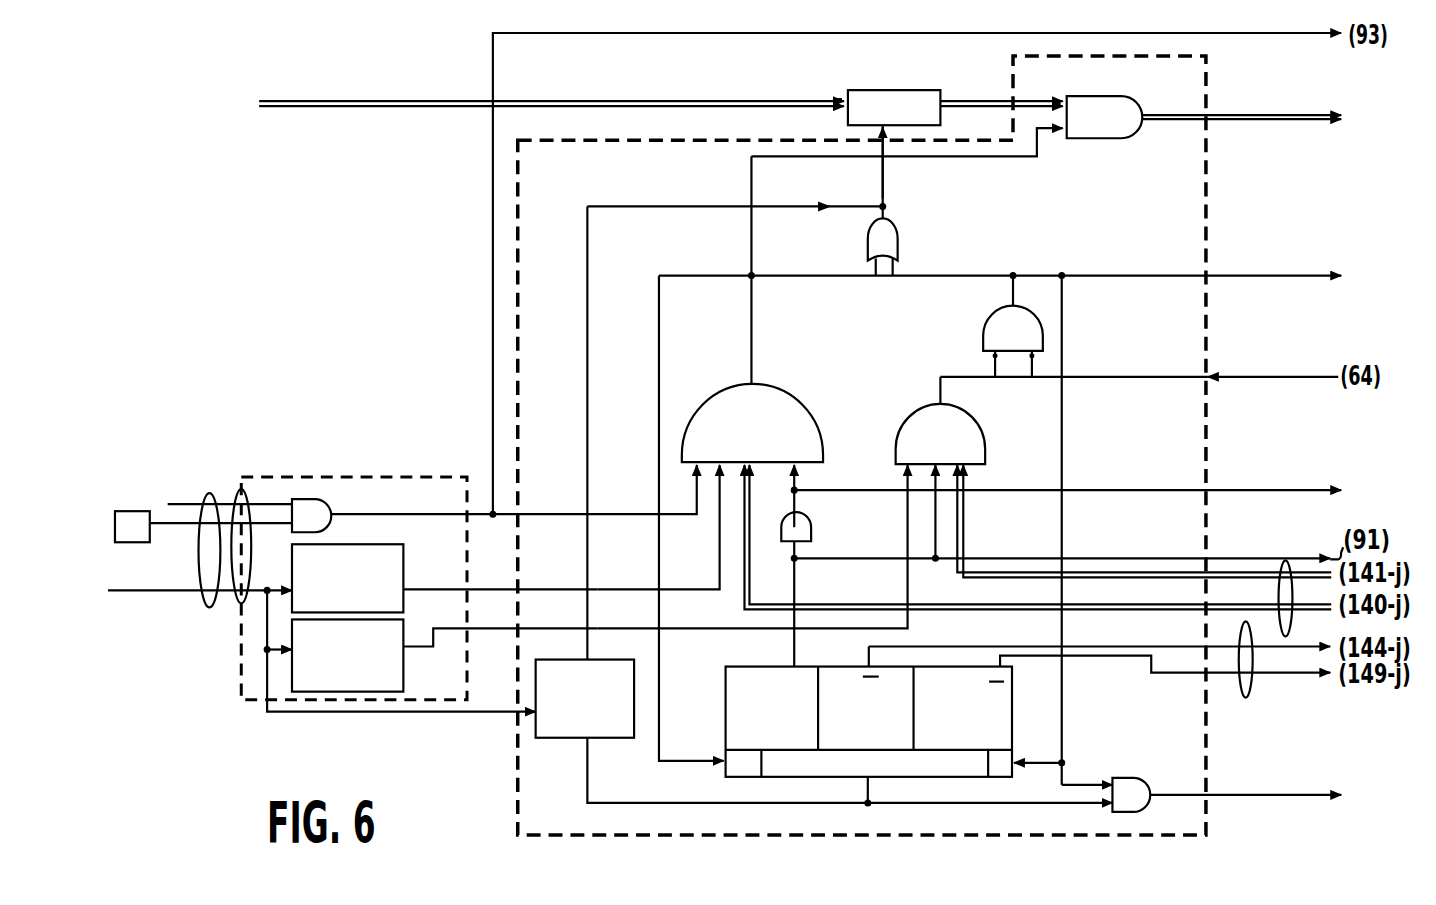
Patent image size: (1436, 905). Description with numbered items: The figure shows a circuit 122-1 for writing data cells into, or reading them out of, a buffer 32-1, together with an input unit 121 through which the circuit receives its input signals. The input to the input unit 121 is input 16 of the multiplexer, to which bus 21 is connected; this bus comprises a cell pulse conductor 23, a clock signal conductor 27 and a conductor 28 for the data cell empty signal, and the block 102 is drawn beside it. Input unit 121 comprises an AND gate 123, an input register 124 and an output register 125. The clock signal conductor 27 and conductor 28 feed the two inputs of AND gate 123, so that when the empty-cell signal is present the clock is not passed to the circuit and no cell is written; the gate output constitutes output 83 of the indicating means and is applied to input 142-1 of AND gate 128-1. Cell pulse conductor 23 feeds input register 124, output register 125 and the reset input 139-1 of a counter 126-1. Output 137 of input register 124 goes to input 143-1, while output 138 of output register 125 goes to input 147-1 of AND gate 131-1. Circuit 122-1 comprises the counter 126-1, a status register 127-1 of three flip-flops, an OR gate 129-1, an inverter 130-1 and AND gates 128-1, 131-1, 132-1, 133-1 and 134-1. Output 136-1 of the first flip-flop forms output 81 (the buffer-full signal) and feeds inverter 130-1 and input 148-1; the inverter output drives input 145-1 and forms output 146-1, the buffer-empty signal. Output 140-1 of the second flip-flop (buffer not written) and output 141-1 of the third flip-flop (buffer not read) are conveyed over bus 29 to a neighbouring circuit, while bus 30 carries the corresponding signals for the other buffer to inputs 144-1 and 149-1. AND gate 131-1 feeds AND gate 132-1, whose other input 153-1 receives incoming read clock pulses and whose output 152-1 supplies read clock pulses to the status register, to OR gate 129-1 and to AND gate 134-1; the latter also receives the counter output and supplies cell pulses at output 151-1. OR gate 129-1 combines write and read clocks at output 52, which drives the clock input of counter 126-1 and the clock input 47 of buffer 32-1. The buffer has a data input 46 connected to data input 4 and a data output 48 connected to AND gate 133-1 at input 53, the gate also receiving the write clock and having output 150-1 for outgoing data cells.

The data input 4 is at (280, 110).
The input 16 is at (242, 490).
The bus 21 is at (210, 494).
The cell pulse conductor 23 is at (190, 594).
The clock signal conductor 27 is at (185, 502).
The conductor for the data cell empty signal 28 is at (185, 526).
The bus 29 is at (1299, 622).
The bus 30 is at (1258, 686).
The buffer 32-1 is at (897, 92).
The data input 46 is at (848, 100).
The clock input 47 is at (897, 130).
The data output 48 is at (950, 100).
The output 52 is at (892, 208).
The input 53 is at (1066, 102).
The output 81 is at (1213, 560).
The output 83 is at (496, 520).
The control circuit 102 is at (133, 543).
The input unit 121 is at (320, 477).
The circuit 122-1 is at (520, 243).
The AND gate 123 is at (333, 515).
The input register 124 is at (405, 566).
The output register 125 is at (405, 682).
The counter 126-1 is at (553, 740).
The status register 127-1 is at (1017, 710).
The AND gate 128-1 is at (820, 420).
The OR gate 129-1 is at (872, 243).
The inverter 130-1 is at (815, 532).
The AND gate 131-1 is at (990, 440).
The AND gate 132-1 is at (988, 330).
The AND gate 133-1 is at (1120, 142).
The AND gate 134-1 is at (1125, 778).
The output of the first flip-flop 136-1 is at (795, 667).
The output 137 is at (470, 592).
The output 138 is at (470, 632).
The reset input 139-1 is at (512, 713).
The output of the second flip-flop 140-1 is at (870, 667).
The output of the third flip-flop 141-1 is at (1213, 675).
The input 142-1 is at (700, 478).
The input 143-1 is at (745, 500).
The input 144-1 is at (723, 480).
The input 145-1 is at (800, 478).
The output 146-1 is at (1213, 492).
The input 147-1 is at (912, 480).
The input 148-1 is at (962, 480).
The input 149-1 is at (972, 470).
The output 150-1 is at (1213, 118).
The output 151-1 is at (1213, 795).
The output 152-1 is at (1213, 278).
The input 153-1 is at (1213, 378).